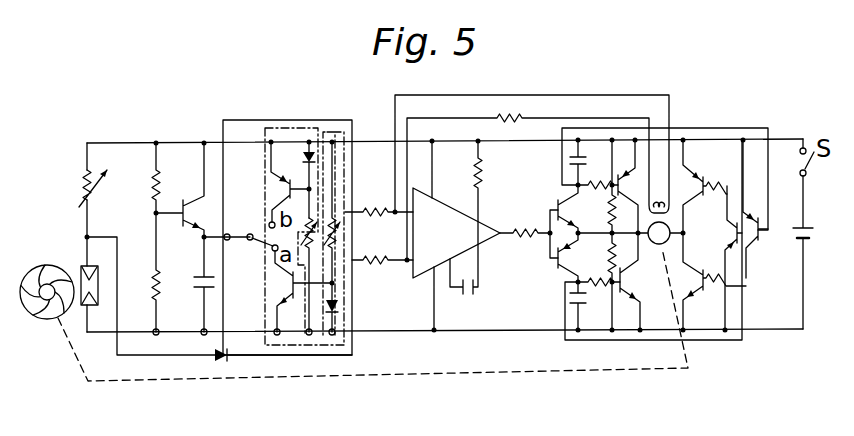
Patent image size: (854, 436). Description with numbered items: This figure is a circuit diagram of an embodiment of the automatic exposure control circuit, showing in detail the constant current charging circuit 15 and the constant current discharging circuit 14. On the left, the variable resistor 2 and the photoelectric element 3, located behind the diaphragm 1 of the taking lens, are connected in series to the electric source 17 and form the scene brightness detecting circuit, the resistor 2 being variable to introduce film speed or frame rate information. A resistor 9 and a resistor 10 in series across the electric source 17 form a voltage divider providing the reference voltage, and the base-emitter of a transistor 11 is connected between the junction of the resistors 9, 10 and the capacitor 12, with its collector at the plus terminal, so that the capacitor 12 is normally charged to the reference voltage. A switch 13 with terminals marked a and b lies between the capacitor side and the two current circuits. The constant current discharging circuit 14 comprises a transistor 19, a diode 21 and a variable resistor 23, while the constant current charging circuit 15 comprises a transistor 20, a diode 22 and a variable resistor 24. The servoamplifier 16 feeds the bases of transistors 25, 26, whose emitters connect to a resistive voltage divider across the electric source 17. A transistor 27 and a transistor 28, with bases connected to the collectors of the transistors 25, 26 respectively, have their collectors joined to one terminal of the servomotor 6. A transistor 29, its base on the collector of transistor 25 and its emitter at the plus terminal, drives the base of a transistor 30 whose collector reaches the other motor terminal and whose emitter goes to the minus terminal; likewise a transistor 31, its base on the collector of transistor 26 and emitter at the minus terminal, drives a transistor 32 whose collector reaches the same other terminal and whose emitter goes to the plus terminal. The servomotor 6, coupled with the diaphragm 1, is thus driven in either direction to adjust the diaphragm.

The diaphragm 1 is at (47, 308).
The resistor 2 is at (92, 204).
The photoelectric element 3 is at (97, 305).
The servomotor 6 is at (658, 244).
The resistor 9 is at (154, 188).
The resistor 10 is at (158, 288).
The transistor 11 is at (190, 212).
The capacitor 12 is at (212, 286).
The switch 13 is at (253, 243).
The constant current discharging circuit 14 is at (270, 355).
The constant current charging circuit 15 is at (270, 126).
The servoamplifier 16 is at (421, 278).
The electric source 17 is at (814, 238).
The transistor 19 is at (288, 286).
The transistor 20 is at (280, 186).
The diode 21 is at (343, 306).
The diode 22 is at (306, 152).
The variable resistor 23 is at (341, 232).
The variable resistor 24 is at (308, 226).
The transistor 25 is at (566, 210).
The transistor 26 is at (565, 258).
The transistor 27 is at (630, 172).
The transistor 28 is at (630, 283).
The transistor 29 is at (755, 238).
The transistor 30 is at (702, 292).
The transistor 31 is at (735, 233).
The transistor 32 is at (687, 182).